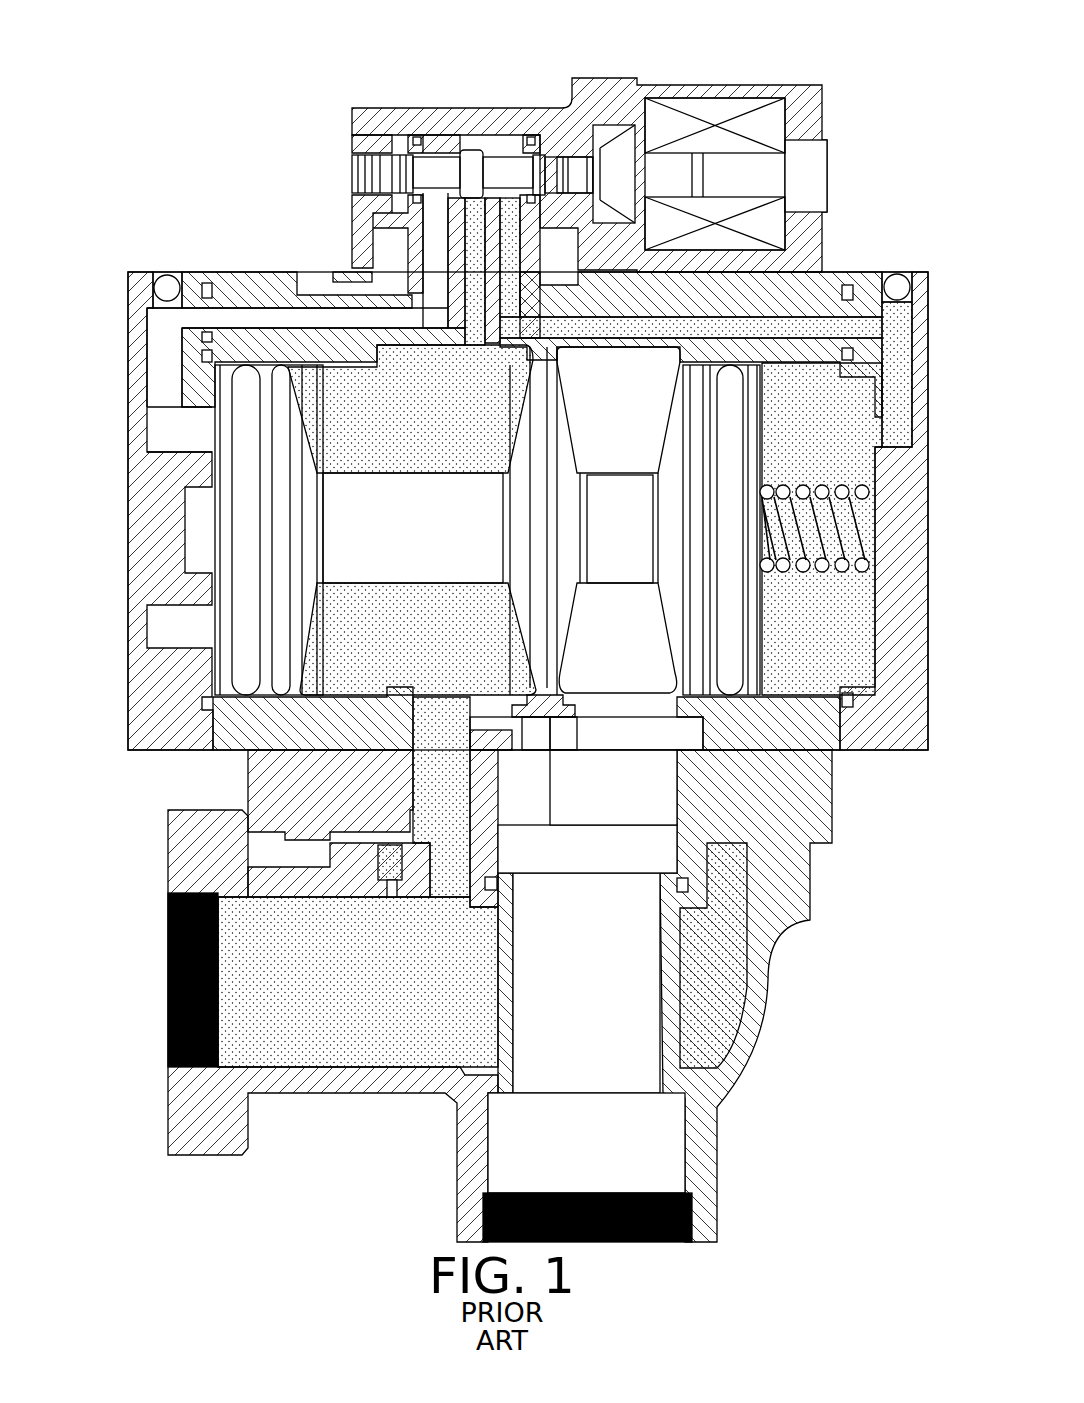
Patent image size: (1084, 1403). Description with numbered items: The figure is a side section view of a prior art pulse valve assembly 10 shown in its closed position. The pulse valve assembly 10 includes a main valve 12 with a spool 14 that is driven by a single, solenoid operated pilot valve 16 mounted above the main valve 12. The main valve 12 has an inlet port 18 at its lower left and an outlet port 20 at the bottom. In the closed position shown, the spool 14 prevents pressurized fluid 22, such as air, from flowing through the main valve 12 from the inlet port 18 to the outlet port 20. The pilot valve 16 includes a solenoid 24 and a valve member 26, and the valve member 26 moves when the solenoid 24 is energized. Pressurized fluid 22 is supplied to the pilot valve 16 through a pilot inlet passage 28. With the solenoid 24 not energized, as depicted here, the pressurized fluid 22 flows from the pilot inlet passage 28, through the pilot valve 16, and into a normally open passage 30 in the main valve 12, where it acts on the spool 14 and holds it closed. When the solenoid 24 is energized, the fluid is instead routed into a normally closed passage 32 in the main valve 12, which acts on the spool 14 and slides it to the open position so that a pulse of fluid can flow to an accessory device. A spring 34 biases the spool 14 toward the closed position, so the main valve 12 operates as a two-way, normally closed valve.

The pulse valve assembly 10 is at (94, 370).
The main valve 12 is at (528, 757).
The spool 14 is at (350, 528).
The pilot valve 16 is at (615, 80).
The inlet port 18 is at (457, 737).
The outlet port 20 is at (643, 730).
The pressurized fluid 22 is at (238, 988).
The solenoid 24 is at (713, 110).
The valve member 26 is at (445, 170).
The pilot inlet passage 28 is at (477, 285).
The normally open passage 30 is at (767, 325).
The normally closed passage 32 is at (263, 318).
The spring 34 is at (843, 490).